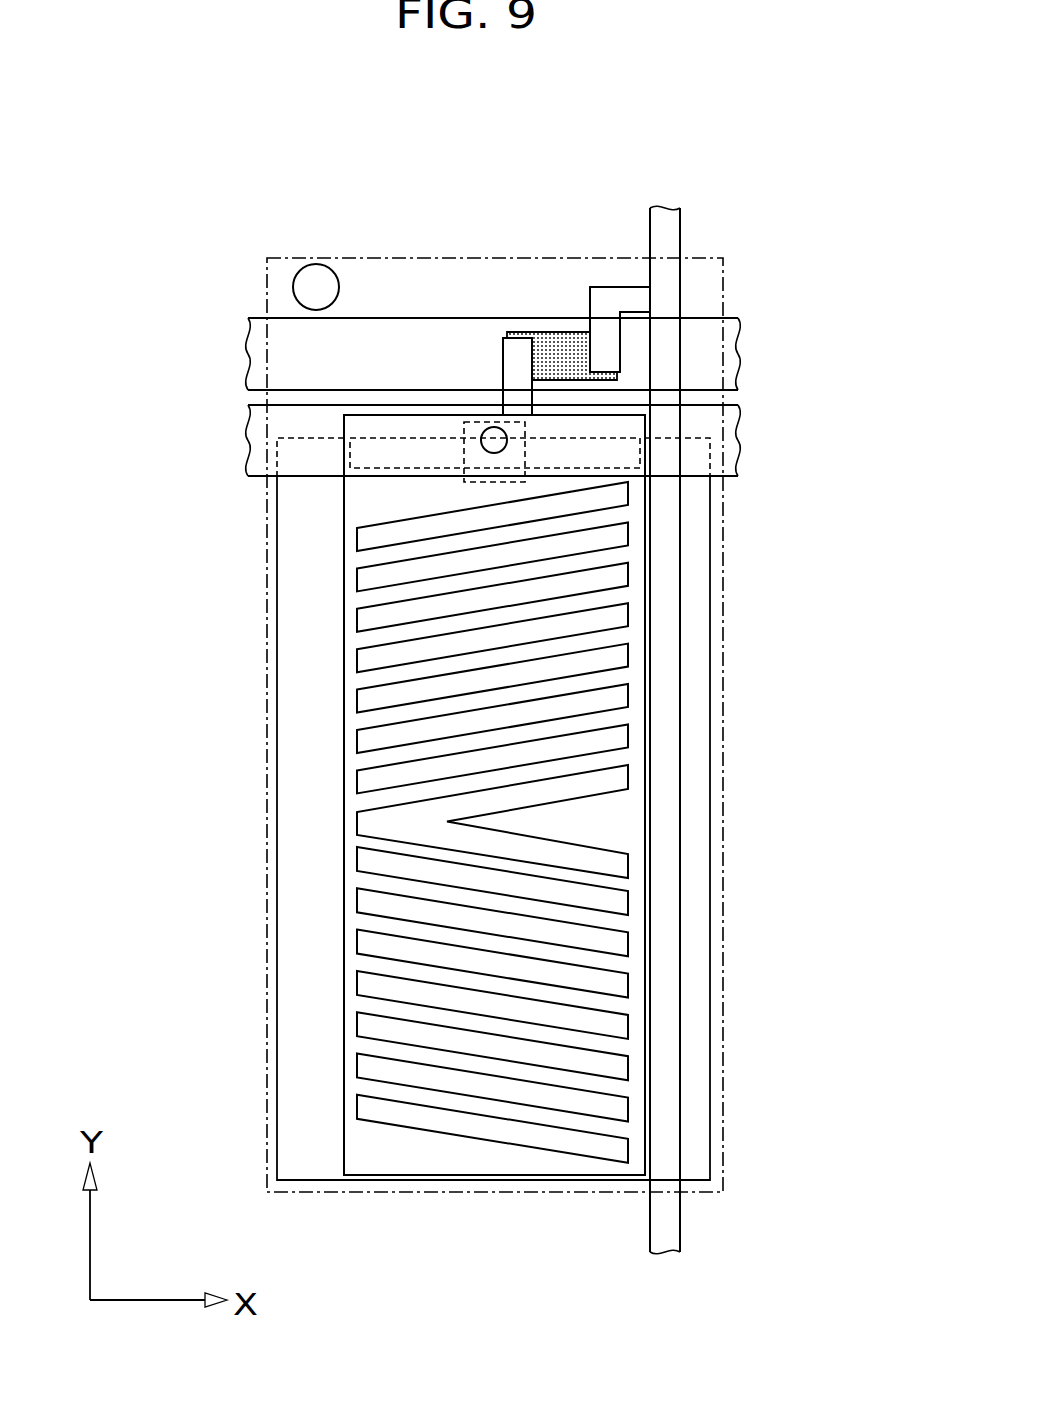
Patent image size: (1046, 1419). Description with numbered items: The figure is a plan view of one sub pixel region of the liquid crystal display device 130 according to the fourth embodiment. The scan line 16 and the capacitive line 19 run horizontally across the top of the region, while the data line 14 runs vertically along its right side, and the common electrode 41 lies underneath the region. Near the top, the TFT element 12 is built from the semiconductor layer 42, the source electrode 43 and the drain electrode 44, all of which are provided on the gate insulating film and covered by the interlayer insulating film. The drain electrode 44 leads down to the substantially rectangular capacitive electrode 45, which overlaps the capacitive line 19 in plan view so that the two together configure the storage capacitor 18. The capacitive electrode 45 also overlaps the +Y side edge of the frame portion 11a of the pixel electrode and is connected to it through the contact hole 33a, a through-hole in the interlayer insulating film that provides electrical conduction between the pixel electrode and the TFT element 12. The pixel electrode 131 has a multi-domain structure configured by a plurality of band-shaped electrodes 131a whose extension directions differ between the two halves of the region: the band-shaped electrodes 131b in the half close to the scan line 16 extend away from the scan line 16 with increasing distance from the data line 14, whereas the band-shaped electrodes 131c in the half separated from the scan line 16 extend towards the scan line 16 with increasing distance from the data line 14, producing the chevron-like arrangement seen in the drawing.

The liquid crystal display device 130 is at (791, 201).
The TFT element 12 is at (593, 168).
The drain electrode 44 is at (503, 353).
The semiconductor layer 42 is at (553, 340).
The source electrode 43 is at (593, 305).
The contact hole 33a is at (488, 430).
The scan line 16 is at (253, 352).
The capacitive electrode 45 is at (350, 438).
The capacitive line 19 is at (257, 447).
The storage capacitor 18 is at (381, 488).
The frame portion 11a is at (372, 513).
The pixel electrode 131 is at (120, 851).
The band-shaped electrodes 131a is at (375, 686).
The band-shaped electrodes 131b is at (425, 715).
The band-shaped electrodes 131c is at (398, 928).
The common electrode 41 is at (300, 1012).
The data line 14 is at (677, 1230).